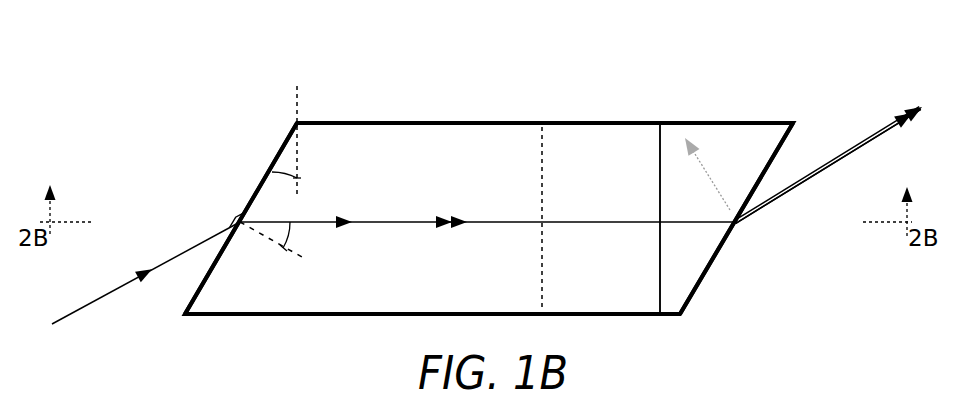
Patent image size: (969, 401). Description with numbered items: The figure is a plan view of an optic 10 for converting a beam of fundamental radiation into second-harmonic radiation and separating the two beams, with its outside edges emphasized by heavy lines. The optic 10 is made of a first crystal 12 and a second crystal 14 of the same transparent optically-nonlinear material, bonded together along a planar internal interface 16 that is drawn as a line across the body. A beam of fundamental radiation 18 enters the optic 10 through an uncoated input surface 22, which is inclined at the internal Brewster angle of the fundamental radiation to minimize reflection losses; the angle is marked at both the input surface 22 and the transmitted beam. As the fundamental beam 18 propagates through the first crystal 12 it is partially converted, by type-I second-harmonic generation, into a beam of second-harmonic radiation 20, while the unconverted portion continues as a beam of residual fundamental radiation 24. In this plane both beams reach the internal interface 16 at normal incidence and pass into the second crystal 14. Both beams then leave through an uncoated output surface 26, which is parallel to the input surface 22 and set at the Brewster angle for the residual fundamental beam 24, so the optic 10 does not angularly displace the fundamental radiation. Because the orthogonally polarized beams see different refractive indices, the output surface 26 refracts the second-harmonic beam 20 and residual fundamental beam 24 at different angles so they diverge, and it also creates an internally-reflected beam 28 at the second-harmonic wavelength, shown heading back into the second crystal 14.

The optic 10 is at (160, 58).
The first crystal 12 is at (467, 271).
The second crystal 14 is at (697, 273).
The planar internal interface 16 is at (655, 157).
The beam of fundamental radiation 18 is at (190, 242).
The beam of second-harmonic radiation 20 is at (845, 152).
The uncoated input surface 22 is at (280, 152).
The beam of residual fundamental radiation 24 is at (832, 175).
The uncoated output surface 26 is at (703, 275).
The internally-reflected beam 28 is at (712, 185).